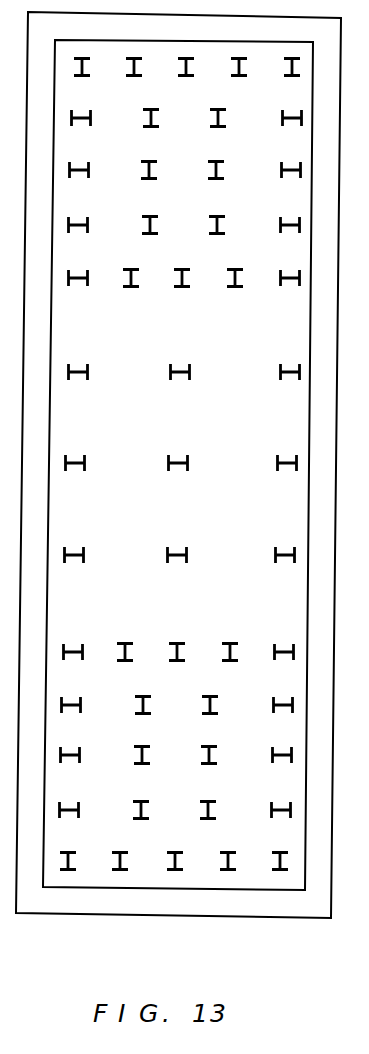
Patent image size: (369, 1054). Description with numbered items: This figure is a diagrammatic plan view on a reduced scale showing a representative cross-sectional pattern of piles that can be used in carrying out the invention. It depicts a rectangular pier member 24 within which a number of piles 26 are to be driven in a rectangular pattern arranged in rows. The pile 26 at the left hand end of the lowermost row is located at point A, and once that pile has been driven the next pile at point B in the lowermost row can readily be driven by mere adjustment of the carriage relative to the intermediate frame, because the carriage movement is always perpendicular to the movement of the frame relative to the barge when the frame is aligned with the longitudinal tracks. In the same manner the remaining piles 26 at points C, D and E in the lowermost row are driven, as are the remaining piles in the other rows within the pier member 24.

The pier member 24 is at (104, 891).
The piles 26 is at (73, 647).
The point A is at (76, 858).
The point B is at (128, 858).
The point C is at (183, 857).
The point D is at (237, 857).
The point E is at (289, 858).